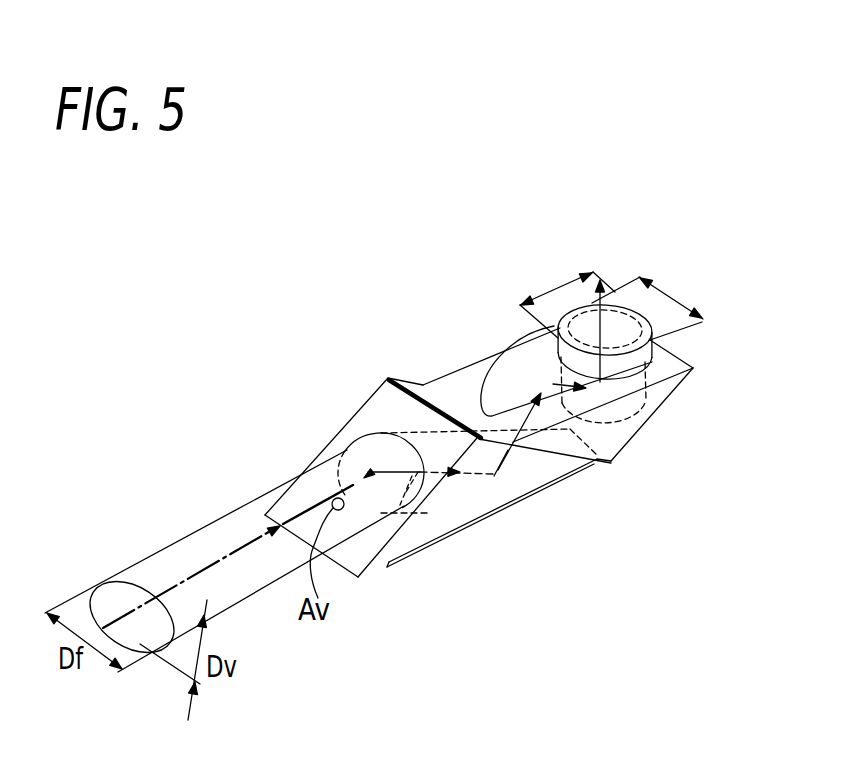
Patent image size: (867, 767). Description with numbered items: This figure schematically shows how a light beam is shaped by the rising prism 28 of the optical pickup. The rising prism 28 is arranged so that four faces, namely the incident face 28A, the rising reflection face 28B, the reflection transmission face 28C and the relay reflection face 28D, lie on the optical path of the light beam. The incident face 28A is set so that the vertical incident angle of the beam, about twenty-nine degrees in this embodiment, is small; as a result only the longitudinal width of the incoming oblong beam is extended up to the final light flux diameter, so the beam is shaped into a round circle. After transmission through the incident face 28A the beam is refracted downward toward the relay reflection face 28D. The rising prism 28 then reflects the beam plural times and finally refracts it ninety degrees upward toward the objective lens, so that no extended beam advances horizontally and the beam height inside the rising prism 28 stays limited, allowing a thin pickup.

The rising prism 28 is at (612, 240).
The incident face 28A is at (383, 413).
The rising reflection face 28B is at (645, 428).
The reflection transmission face 28C is at (490, 350).
The relay reflection face 28D is at (447, 541).